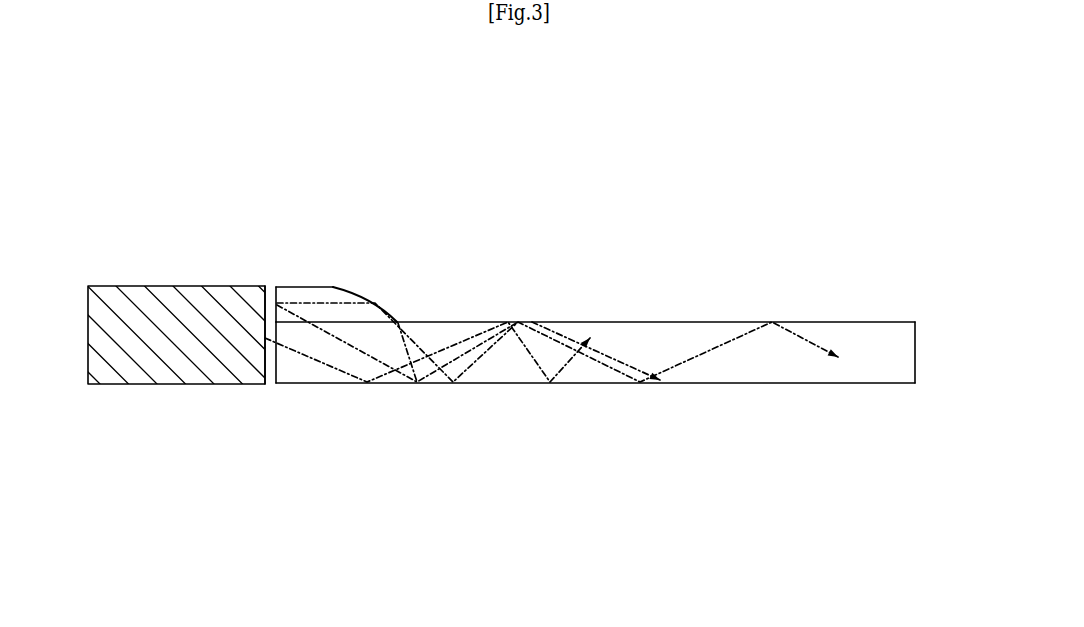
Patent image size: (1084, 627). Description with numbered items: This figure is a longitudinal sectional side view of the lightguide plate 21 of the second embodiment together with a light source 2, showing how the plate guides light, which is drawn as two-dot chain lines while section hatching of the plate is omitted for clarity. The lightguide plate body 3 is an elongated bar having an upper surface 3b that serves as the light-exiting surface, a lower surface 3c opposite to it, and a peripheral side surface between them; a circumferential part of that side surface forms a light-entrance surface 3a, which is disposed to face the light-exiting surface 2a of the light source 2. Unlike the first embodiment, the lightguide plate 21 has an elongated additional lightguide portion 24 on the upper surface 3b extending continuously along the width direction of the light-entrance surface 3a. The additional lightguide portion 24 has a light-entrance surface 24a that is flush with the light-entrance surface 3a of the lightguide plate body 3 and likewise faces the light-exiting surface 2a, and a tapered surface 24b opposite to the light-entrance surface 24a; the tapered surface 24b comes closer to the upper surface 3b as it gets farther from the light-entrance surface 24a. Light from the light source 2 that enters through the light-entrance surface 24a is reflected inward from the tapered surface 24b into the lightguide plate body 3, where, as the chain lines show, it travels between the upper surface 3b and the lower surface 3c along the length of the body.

The light source 2 is at (175, 286).
The light-exiting surface of light source 2a is at (266, 360).
The lightguide plate body 3 is at (690, 383).
The light-entrance surface of lightguide plate body 3a is at (276, 366).
The upper surface 3b is at (622, 322).
The lower surface 3c is at (577, 383).
The lightguide plate 21 is at (758, 232).
The additional lightguide portion 24 is at (336, 285).
The light-entrance surface of additional lightguide portion 24a is at (275, 302).
The tapered surface 24b is at (387, 307).